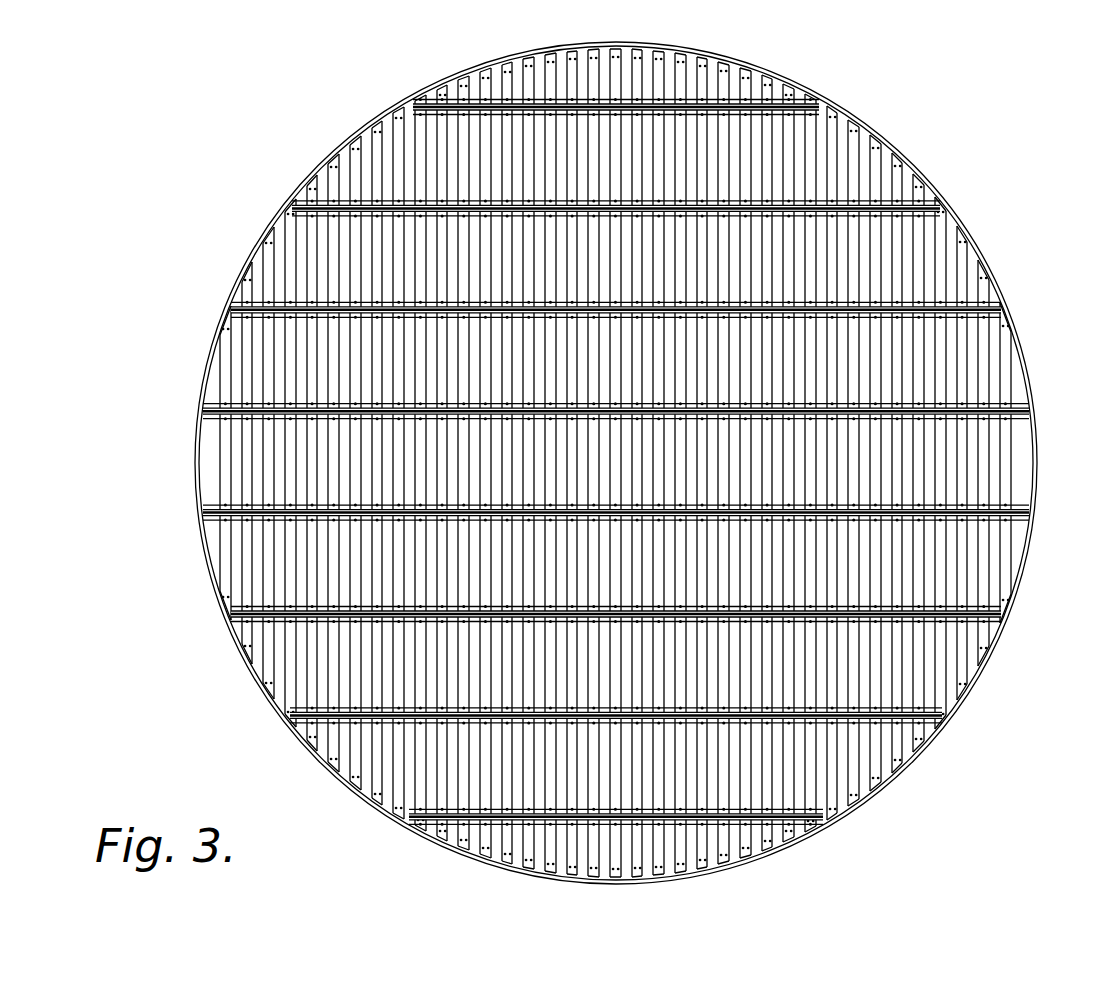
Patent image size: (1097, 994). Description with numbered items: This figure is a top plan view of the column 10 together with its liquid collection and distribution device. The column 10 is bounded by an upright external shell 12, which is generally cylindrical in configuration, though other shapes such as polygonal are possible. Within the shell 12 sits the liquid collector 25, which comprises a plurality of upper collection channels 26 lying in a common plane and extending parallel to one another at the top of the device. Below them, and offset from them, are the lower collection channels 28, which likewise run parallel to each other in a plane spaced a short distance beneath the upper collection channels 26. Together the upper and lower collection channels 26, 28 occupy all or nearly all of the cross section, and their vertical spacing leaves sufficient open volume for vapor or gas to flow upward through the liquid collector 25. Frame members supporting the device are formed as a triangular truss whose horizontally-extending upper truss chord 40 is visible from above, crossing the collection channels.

The column 10 is at (838, 101).
The shell 12 is at (900, 150).
The liquid collector 25 is at (937, 235).
The upper collection channels 26 is at (992, 298).
The lower collection channels 28 is at (1005, 366).
The upper truss chord 40 is at (895, 208).